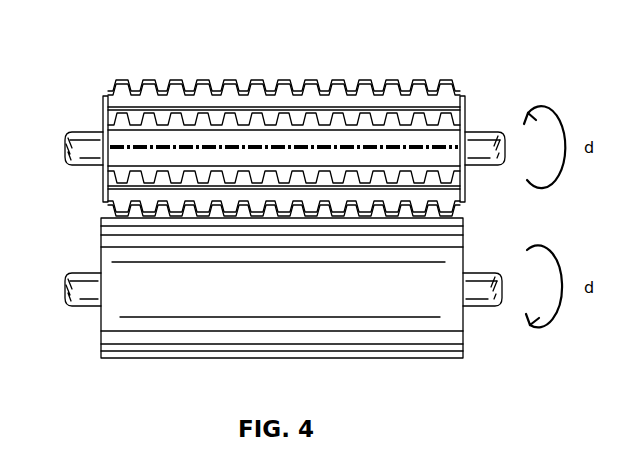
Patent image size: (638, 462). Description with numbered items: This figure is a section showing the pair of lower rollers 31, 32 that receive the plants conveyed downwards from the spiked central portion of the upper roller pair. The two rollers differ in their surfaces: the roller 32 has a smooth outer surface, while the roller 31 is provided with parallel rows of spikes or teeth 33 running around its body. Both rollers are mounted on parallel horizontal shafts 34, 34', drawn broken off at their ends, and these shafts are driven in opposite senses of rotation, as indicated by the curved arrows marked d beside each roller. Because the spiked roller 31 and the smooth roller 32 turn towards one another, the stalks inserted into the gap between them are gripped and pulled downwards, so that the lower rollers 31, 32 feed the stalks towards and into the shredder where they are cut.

The lower roller 31 is at (450, 140).
The lower roller 32 is at (443, 343).
The spikes or teeth 33 is at (336, 82).
The shaft 34 is at (64, 143).
The shaft 34' is at (61, 283).